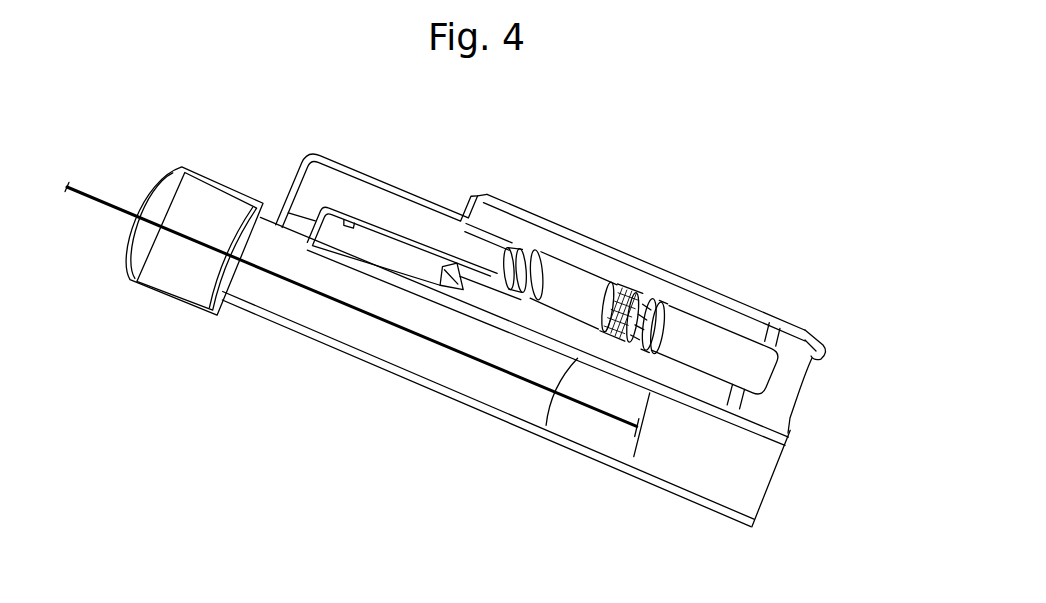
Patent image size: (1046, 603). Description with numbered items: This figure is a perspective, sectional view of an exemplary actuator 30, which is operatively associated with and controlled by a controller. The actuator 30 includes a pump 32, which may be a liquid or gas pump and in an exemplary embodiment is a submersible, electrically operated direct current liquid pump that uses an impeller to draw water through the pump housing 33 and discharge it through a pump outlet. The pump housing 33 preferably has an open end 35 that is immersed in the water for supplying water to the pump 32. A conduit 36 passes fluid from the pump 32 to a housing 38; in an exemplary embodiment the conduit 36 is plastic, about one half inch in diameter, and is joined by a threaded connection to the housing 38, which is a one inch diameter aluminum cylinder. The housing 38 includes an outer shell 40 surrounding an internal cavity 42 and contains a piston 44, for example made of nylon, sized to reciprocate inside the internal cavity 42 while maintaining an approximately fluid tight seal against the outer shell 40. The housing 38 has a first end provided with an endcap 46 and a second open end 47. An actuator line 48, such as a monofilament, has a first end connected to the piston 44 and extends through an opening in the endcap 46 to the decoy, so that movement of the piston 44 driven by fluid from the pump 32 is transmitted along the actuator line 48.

The actuator 30 is at (608, 213).
The pump 32 is at (697, 311).
The pump housing 33 is at (767, 313).
The open end 35 is at (828, 358).
The conduit 36 is at (333, 164).
The housing 38 is at (393, 380).
The outer shell 40 is at (497, 413).
The internal cavity 42 is at (318, 322).
The piston 44 is at (590, 437).
The endcap 46 is at (213, 178).
The second open end 47 is at (757, 501).
The actuator line 48 is at (86, 193).